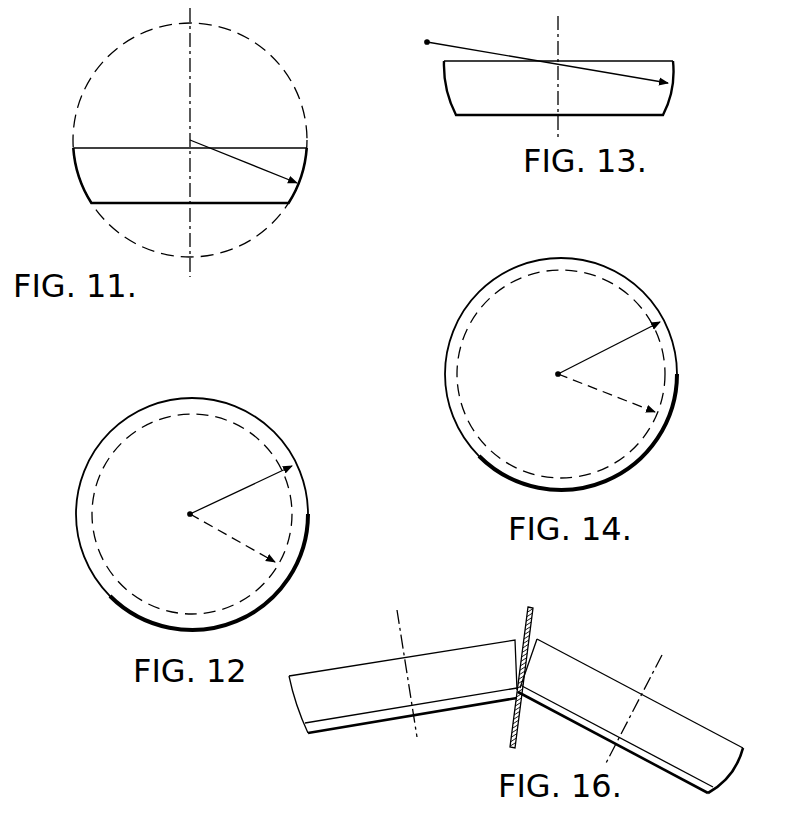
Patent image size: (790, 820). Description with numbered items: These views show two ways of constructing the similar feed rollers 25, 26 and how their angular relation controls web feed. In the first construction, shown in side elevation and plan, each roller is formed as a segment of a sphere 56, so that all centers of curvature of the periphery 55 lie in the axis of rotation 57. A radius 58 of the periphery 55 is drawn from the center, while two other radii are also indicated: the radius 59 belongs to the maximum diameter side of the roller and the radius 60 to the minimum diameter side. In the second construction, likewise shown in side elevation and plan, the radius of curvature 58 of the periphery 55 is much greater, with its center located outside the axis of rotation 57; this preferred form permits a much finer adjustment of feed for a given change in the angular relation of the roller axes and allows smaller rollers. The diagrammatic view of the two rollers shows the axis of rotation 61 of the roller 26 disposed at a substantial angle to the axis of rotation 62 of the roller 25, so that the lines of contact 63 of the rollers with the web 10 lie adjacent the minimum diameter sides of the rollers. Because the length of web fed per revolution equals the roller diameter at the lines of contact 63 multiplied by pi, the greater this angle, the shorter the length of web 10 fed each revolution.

In FIG. 16, the web 10 is at (531, 612).
In FIG. 16, the roller 25 is at (300, 703).
In FIG. 16, the roller 26 is at (722, 742).
In FIG. 11, the periphery 55 is at (78, 160).
In FIG. 13, the periphery 55 is at (513, 106).
In FIG. 11, the sphere 56 is at (285, 77).
In FIG. 11, the axis of rotation 57 is at (190, 109).
In FIG. 13, the axis of rotation 57 is at (559, 42).
In FIG. 12, the axis of rotation 57 is at (189, 514).
In FIG. 14, the axis of rotation 57 is at (556, 375).
In FIG. 11, the radius of the periphery 58 is at (250, 159).
In FIG. 13, the radius of the periphery 58 is at (490, 38).
In FIG. 12, the radius 59 is at (239, 492).
In FIG. 14, the radius 59 is at (586, 363).
In FIG. 12, the radius 60 is at (228, 540).
In FIG. 14, the radius 60 is at (614, 394).
In FIG. 16, the axis of rotation 61 is at (655, 675).
In FIG. 16, the axis of rotation 62 is at (400, 627).
In FIG. 16, the lines of contact 63 is at (432, 701).